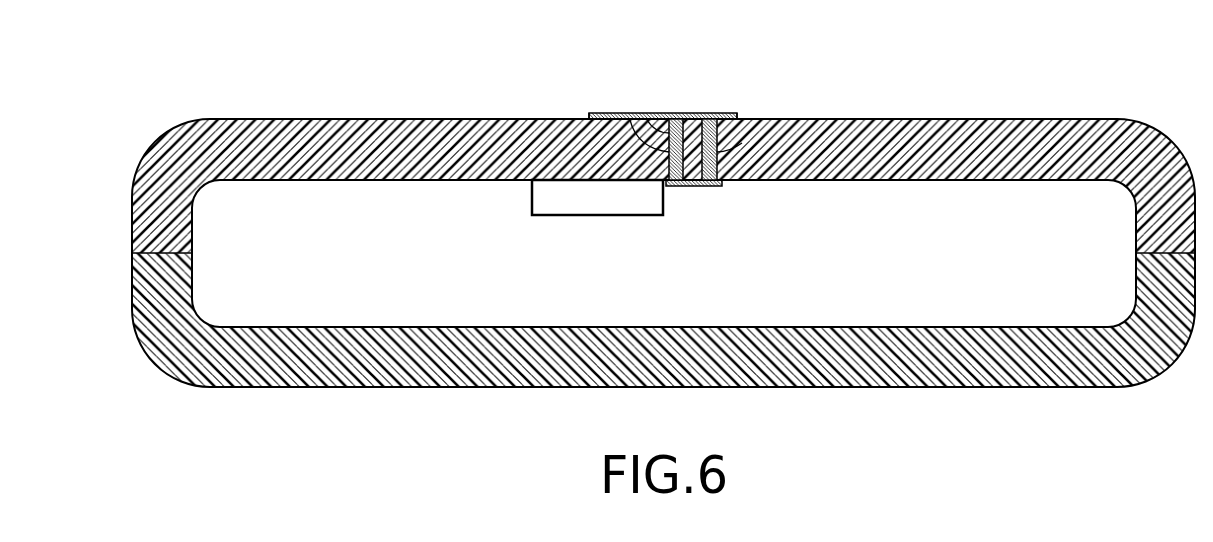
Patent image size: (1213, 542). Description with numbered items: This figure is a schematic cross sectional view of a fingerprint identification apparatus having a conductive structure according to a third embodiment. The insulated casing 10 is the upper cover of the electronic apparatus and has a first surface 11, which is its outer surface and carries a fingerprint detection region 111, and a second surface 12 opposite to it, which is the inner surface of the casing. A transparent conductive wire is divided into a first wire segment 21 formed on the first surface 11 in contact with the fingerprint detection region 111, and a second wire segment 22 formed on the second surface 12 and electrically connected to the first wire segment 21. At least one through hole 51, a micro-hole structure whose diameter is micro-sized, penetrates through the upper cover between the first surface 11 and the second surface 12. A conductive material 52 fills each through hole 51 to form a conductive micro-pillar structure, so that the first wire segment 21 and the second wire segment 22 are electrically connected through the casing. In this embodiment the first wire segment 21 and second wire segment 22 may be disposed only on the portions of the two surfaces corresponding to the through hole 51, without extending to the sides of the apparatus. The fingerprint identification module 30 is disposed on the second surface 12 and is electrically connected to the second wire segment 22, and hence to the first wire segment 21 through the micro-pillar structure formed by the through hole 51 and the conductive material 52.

The insulated casing 10 is at (177, 160).
The first surface 11 is at (385, 119).
The second surface 12 is at (386, 180).
The fingerprint detection region 111 is at (617, 113).
The first wire segment 21 is at (605, 113).
The second wire segment 22 is at (698, 187).
The through hole 51 is at (649, 113).
The conductive material 52 is at (630, 113).
The fingerprint identification module 30 is at (598, 208).